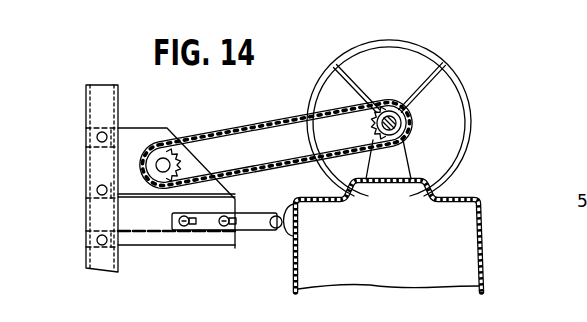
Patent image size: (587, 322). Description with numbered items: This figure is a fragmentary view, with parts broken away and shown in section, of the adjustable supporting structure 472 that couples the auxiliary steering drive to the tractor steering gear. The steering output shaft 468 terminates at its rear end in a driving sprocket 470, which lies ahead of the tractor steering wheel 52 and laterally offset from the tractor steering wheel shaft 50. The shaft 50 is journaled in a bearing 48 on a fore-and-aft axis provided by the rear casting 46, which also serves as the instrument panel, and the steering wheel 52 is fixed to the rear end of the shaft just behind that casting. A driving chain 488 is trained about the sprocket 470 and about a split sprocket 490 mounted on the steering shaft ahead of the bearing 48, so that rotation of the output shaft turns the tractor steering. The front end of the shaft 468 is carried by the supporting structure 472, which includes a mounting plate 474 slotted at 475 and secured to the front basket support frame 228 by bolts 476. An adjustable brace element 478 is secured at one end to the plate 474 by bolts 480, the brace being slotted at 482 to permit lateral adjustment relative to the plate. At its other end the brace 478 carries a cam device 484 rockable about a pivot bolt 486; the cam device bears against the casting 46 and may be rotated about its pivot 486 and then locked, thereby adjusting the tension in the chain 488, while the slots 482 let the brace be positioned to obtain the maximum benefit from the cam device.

The front upright support frame 228 is at (97, 97).
The adjustable supporting structure 472 is at (160, 128).
The driving sprocket 470 is at (165, 149).
The steering output shaft 468 is at (170, 163).
The driving chain 488 is at (263, 123).
The mounting plate 474 is at (130, 142).
The slots 475 is at (97, 170).
The bolts 476 is at (98, 243).
The slots 482 is at (180, 227).
The bolts 480 is at (220, 228).
The adjustable brace element 478 is at (257, 223).
The pivot bolt 486 is at (275, 216).
The cam device 484 is at (295, 228).
The split sprocket 490 is at (401, 116).
The steering wheel shaft 50 is at (397, 125).
The bearing 48 is at (400, 160).
The steering wheel 52 is at (447, 75).
The rear casting 46 is at (482, 203).